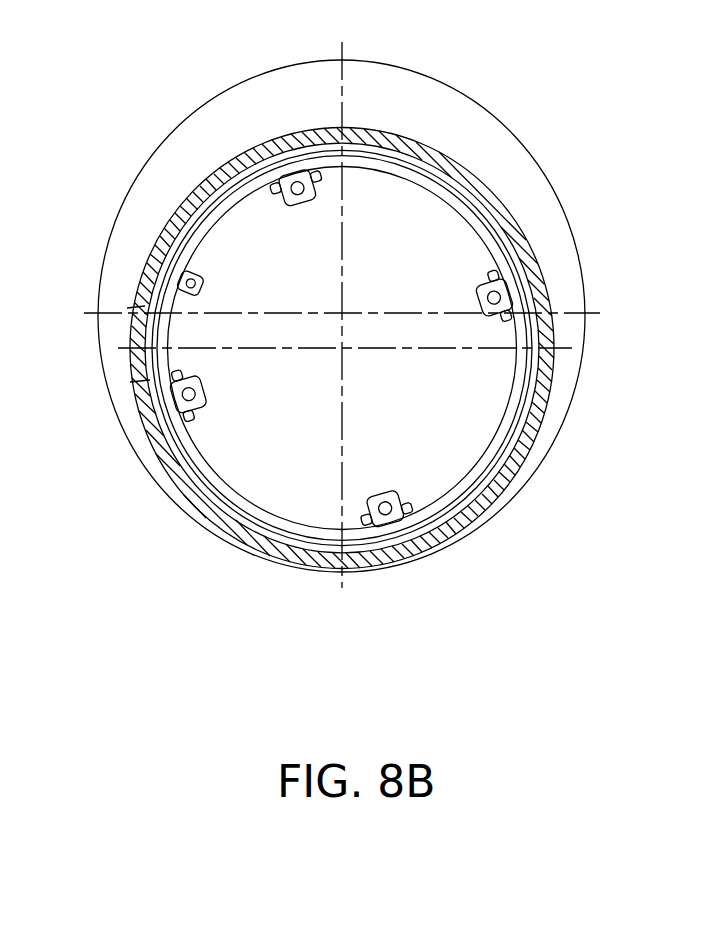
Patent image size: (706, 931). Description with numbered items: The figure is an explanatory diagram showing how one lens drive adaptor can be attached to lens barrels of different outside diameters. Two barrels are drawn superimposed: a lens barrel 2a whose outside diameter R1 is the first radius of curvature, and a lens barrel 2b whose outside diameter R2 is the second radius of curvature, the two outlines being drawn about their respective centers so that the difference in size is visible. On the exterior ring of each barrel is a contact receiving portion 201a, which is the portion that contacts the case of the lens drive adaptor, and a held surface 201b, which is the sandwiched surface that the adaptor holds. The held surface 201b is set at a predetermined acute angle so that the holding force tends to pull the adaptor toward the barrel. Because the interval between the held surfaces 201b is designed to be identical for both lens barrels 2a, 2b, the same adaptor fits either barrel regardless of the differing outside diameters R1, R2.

The lens barrel 2a is at (489, 112).
The lens barrel 2b is at (530, 250).
The outside diameter R1 is at (530, 155).
The outside diameter R2 is at (540, 268).
The contact receiving portion 201a is at (447, 547).
The held surface 201b is at (462, 526).